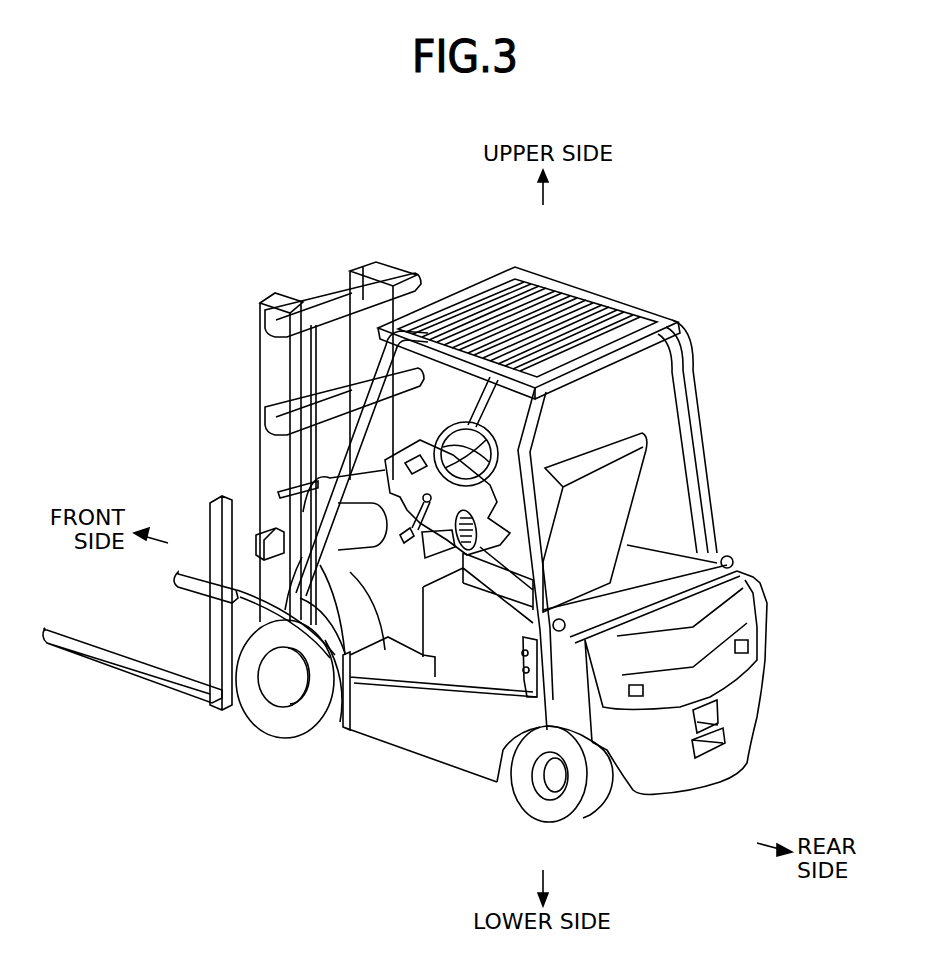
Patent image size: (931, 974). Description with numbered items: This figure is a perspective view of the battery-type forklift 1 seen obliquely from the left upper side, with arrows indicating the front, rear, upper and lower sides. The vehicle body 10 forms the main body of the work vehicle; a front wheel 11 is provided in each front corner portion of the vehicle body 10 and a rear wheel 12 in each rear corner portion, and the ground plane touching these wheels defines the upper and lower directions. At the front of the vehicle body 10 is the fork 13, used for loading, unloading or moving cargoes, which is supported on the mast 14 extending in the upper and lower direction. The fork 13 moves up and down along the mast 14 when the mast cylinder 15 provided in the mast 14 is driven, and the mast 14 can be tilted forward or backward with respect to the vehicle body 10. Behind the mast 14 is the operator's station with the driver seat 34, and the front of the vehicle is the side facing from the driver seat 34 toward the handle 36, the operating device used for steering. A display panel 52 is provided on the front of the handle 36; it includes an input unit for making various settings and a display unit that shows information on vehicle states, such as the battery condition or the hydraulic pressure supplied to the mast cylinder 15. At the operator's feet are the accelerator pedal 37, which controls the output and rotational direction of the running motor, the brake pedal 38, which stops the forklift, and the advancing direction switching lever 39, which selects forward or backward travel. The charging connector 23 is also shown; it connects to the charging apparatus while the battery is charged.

The battery-type forklift 1 is at (211, 266).
The vehicle body 10 is at (490, 771).
The front wheel 11 is at (260, 720).
The rear wheel 12 is at (532, 800).
The fork 13 is at (106, 649).
The mast 14 is at (366, 270).
The mast cylinder 15 is at (300, 372).
The charging connector 23 is at (352, 708).
The driver seat 34 is at (612, 443).
The handle 36 is at (512, 436).
The accelerator pedal 37 is at (458, 548).
The brake pedal 38 is at (440, 505).
The advancing direction switching lever 39 is at (405, 540).
The display panel 52 is at (432, 466).